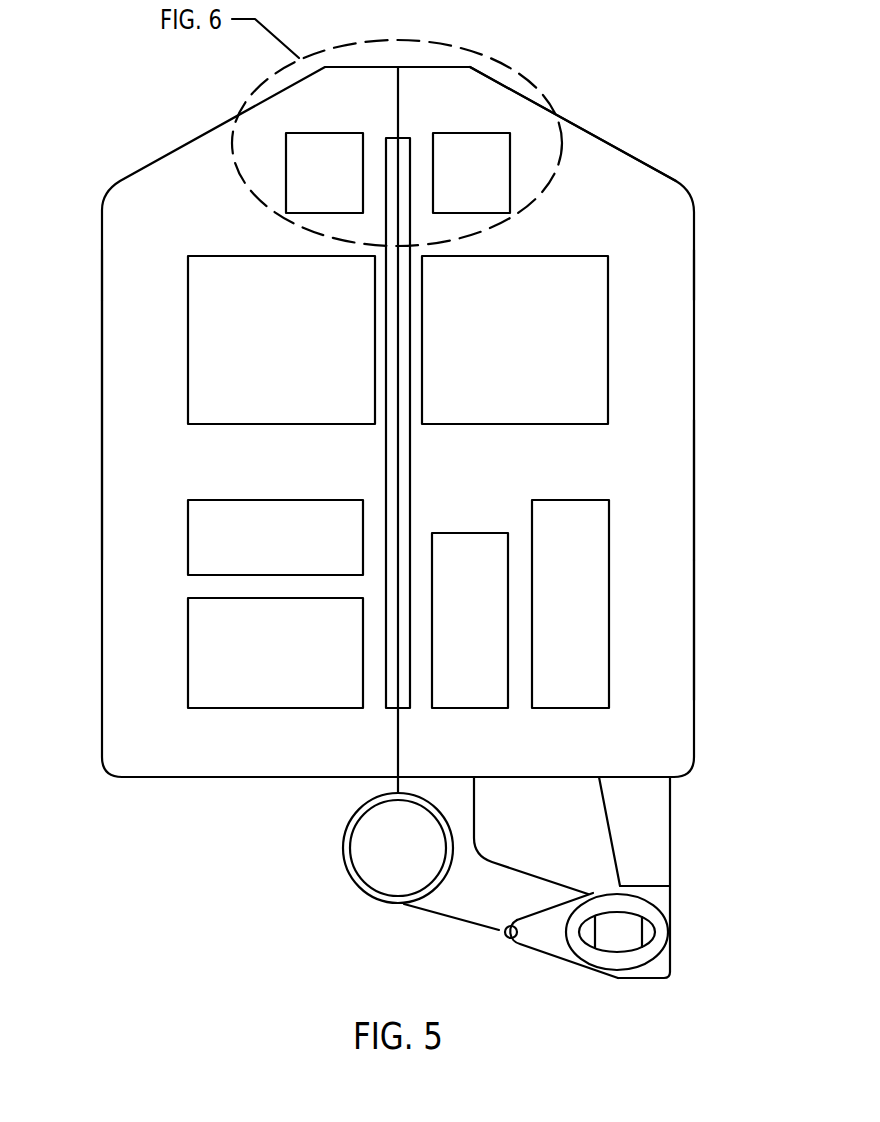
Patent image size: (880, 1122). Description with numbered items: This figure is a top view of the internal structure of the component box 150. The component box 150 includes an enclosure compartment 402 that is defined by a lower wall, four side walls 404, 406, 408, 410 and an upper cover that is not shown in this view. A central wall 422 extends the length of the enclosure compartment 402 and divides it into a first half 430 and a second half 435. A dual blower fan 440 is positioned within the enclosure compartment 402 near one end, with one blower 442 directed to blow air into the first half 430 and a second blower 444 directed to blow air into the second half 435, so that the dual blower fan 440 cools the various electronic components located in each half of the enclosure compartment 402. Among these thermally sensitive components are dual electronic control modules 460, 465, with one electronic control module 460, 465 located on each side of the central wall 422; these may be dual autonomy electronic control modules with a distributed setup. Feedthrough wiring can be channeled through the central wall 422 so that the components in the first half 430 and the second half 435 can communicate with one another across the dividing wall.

The component box 150 is at (694, 486).
The enclosure compartment 402 is at (176, 537).
The side wall 404 is at (572, 121).
The side wall 406 is at (102, 485).
The side wall 408 is at (237, 778).
The side wall 410 is at (694, 600).
The central wall 422 is at (410, 486).
The first half 430 is at (128, 298).
The second half 435 is at (667, 298).
The dual blower fan 440 is at (402, 60).
The blower 442 is at (308, 192).
The second blower 444 is at (488, 192).
The electronic control module 460 is at (188, 341).
The electronic control module 465 is at (608, 341).